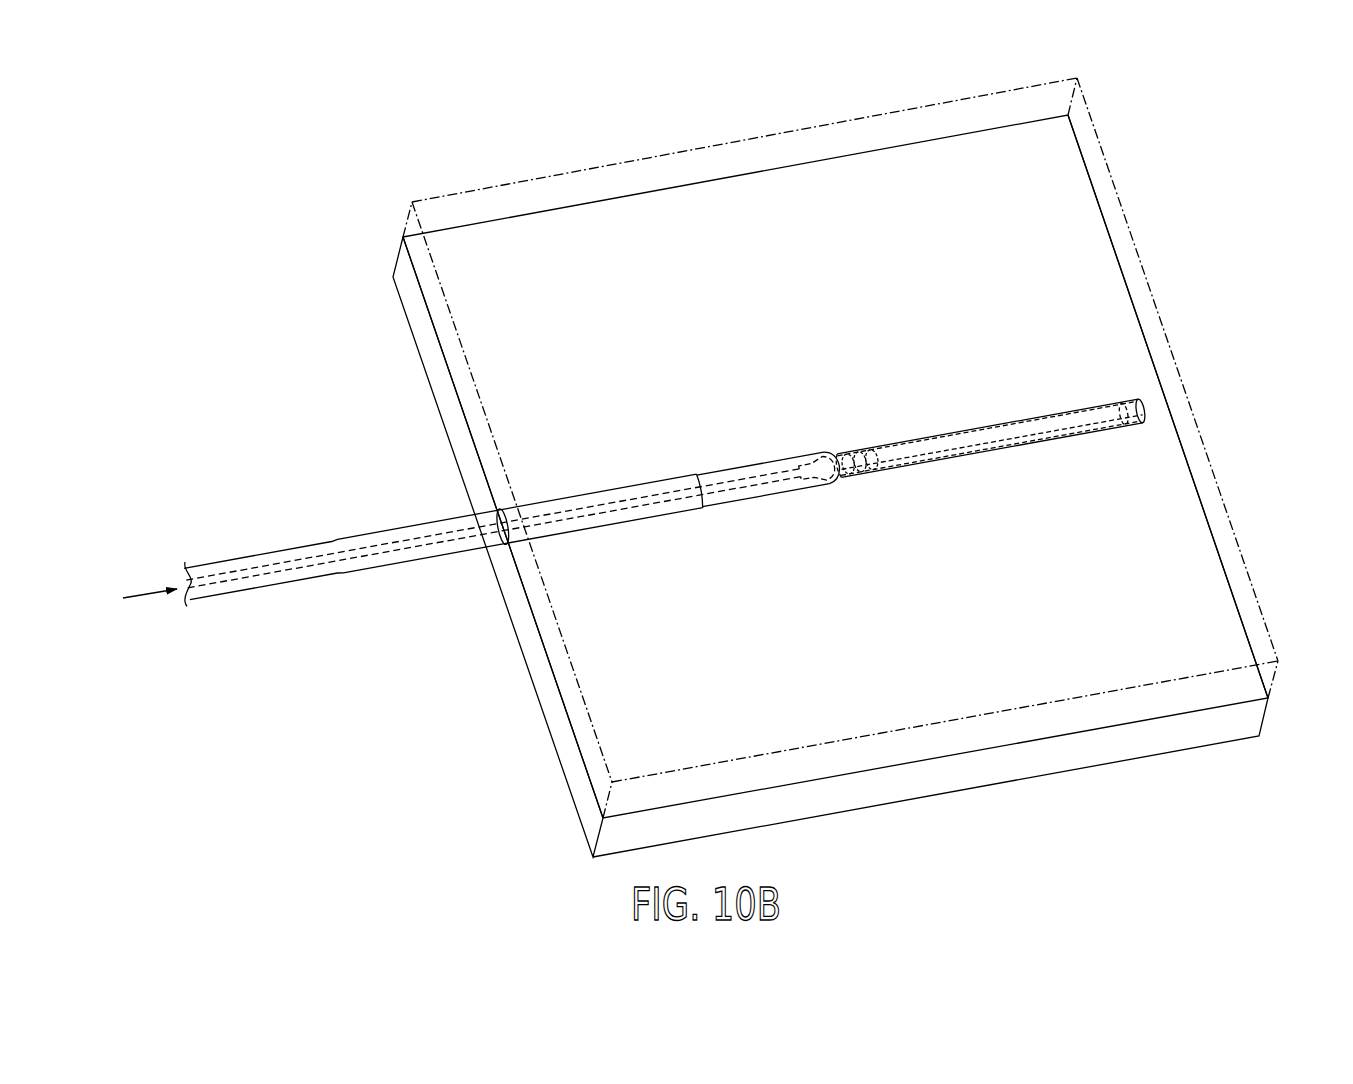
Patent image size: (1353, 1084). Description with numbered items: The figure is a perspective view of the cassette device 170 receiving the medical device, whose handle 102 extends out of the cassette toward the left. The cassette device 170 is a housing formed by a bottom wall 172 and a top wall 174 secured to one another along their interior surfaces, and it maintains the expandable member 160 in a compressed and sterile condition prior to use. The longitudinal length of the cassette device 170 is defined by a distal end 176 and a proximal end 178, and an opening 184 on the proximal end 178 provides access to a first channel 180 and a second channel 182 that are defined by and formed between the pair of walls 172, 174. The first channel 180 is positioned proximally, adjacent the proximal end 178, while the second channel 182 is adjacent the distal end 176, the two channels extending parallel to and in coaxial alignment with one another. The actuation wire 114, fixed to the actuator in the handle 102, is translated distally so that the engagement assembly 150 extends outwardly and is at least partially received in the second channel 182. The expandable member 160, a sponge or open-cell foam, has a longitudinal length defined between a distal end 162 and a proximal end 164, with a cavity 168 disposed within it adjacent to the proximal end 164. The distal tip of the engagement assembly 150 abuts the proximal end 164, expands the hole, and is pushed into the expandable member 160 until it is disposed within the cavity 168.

The handle 102 is at (332, 583).
The actuation wire 114 is at (595, 507).
The engagement assembly 150 is at (822, 448).
The expandable member 160 is at (987, 443).
The distal end 162 is at (1100, 430).
The proximal end 164 is at (883, 463).
The cavity 168 is at (872, 448).
The cassette device 170 is at (210, 172).
The bottom wall 172 is at (1095, 752).
The top wall 174 is at (602, 165).
The distal end 176 is at (1152, 208).
The proximal end 178 is at (538, 788).
The first channel 180 is at (627, 477).
The second channel 182 is at (987, 418).
The opening 184 is at (502, 546).